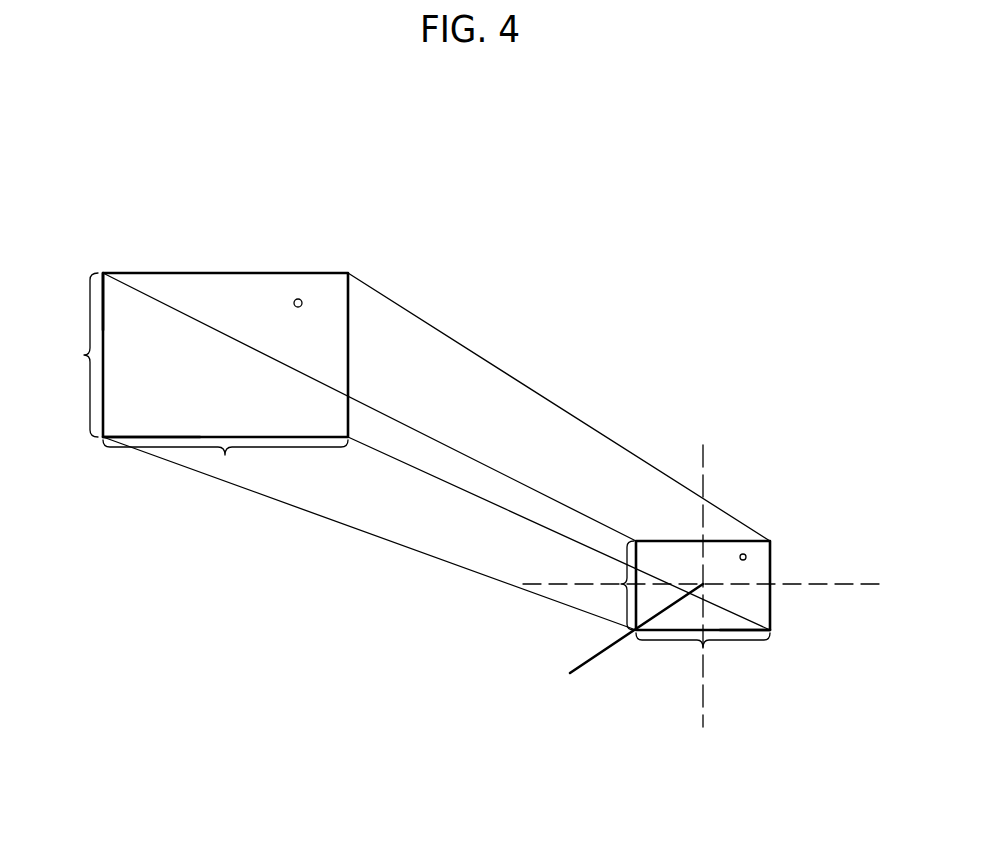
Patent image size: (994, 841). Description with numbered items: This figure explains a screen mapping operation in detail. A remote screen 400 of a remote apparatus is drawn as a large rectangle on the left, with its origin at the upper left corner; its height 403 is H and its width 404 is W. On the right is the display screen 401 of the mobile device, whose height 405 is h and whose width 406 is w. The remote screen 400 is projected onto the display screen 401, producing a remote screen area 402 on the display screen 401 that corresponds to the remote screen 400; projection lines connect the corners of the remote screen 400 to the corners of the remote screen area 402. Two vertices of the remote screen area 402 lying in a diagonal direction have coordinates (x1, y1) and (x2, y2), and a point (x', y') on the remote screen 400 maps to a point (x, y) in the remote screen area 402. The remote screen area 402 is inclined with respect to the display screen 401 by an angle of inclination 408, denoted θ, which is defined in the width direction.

The remote screen 400 is at (259, 286).
The display screen 401 is at (787, 483).
The remote screen area 402 is at (772, 553).
The height 403 is at (98, 292).
The width 404 is at (147, 438).
The height 405 is at (632, 623).
The width 406 is at (743, 633).
The angle of inclination 408 is at (660, 585).